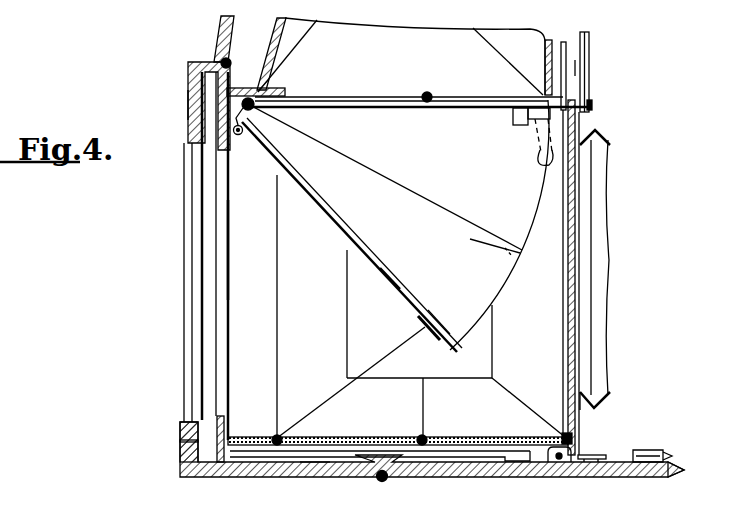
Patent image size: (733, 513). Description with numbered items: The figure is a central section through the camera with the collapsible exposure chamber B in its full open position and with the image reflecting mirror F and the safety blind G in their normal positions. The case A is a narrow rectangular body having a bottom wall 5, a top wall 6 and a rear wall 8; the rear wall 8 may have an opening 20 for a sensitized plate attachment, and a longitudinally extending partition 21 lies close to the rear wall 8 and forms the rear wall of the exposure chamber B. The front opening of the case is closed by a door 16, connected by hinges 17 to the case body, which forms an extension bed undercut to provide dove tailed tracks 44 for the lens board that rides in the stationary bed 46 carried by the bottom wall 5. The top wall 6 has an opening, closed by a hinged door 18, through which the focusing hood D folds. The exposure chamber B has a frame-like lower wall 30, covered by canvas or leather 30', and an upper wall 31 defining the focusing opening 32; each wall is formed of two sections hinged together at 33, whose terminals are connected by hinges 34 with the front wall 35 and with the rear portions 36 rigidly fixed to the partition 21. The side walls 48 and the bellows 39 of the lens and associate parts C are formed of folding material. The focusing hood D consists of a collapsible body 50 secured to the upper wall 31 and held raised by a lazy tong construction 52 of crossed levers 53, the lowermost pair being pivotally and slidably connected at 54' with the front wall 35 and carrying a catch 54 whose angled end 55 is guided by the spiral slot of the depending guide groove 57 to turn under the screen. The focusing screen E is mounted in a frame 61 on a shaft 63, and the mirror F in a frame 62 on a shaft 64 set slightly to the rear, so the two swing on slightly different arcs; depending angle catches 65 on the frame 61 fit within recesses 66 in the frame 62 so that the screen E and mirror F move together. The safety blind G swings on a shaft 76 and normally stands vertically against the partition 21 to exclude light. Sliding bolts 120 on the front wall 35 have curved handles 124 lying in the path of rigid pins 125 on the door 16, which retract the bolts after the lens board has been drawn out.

The bottom wall 5 is at (256, 478).
The top wall 6 is at (220, 62).
The rear wall 8 is at (180, 446).
The door 16 is at (682, 470).
The hinges 17 is at (385, 480).
The hinged door 18 is at (220, 30).
The opening 20 is at (186, 257).
The partition 21 is at (187, 104).
The lower wall 30 is at (398, 423).
The canvas or leather 30' is at (380, 476).
The upper wall 31 is at (286, 94).
The focusing opening 32 is at (421, 95).
The hinge 33 is at (428, 436).
The hinges 34 is at (562, 433).
The front wall 35 is at (568, 388).
The rear portions 36 is at (274, 438).
The bellows 39 is at (608, 138).
The dove tailed tracks 44 is at (664, 460).
The stationary bed 46 is at (312, 478).
The side walls 48 is at (572, 312).
The collapsible body 50 is at (284, 22).
The lazy tong construction 52 is at (589, 36).
The crossed levers 53 is at (566, 50).
The catch 54 is at (595, 67).
The pivotal and slidable connection 54' is at (604, 107).
The angled end 55 is at (536, 122).
The depending guide groove 57 is at (547, 165).
The frame 61 is at (368, 100).
The frame 62 is at (338, 226).
The shaft 63 is at (256, 108).
The shaft 64 is at (238, 136).
The angle catches 65 is at (513, 120).
The recesses 66 is at (432, 342).
The shaft 76 is at (224, 438).
The sliding bolts 120 is at (559, 464).
The curved handles 124 is at (628, 452).
The rigid pins 125 is at (590, 456).
The case A is at (181, 426).
The collapsible exposure chamber B is at (398, 225).
The lens and associate parts C is at (604, 186).
The focusing hood D is at (415, 32).
The focusing screen E is at (462, 100).
The image reflecting mirror F is at (385, 276).
The safety blind G is at (231, 310).